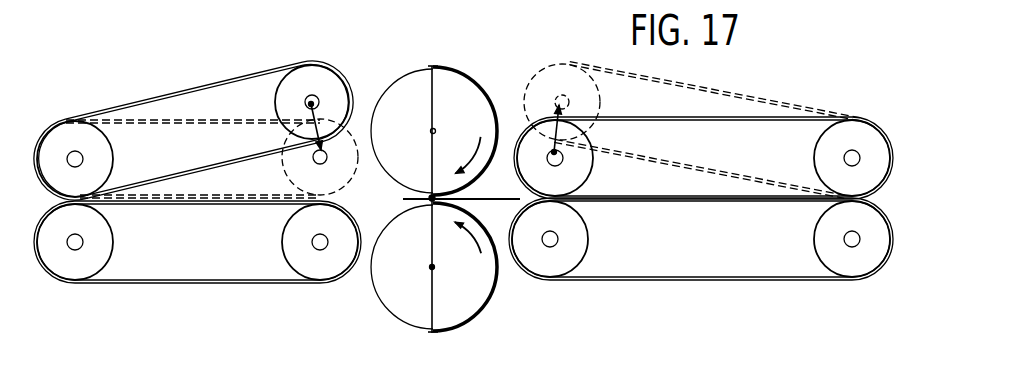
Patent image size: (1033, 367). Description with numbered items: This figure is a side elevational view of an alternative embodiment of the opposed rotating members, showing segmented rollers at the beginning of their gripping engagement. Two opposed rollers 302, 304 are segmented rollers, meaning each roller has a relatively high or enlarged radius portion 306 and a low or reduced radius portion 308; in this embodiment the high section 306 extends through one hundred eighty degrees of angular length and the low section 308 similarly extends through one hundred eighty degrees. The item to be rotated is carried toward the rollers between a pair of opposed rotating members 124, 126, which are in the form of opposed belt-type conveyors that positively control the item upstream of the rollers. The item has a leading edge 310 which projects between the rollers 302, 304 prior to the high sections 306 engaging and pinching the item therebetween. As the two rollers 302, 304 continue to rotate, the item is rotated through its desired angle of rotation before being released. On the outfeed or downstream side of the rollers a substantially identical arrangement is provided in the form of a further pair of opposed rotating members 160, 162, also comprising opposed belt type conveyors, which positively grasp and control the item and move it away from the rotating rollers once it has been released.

The opposed rotating member 160 is at (170, 93).
The opposed rotating member 162 is at (197, 285).
The opposed rotating member 124 is at (727, 120).
The opposed rotating member 126 is at (710, 282).
The segmented roller 302 is at (453, 72).
The segmented roller 304 is at (467, 312).
The high or enlarged radius portion 306 is at (437, 65).
The low or reduced radius portion 308 is at (392, 82).
The leading edge 310 is at (403, 199).